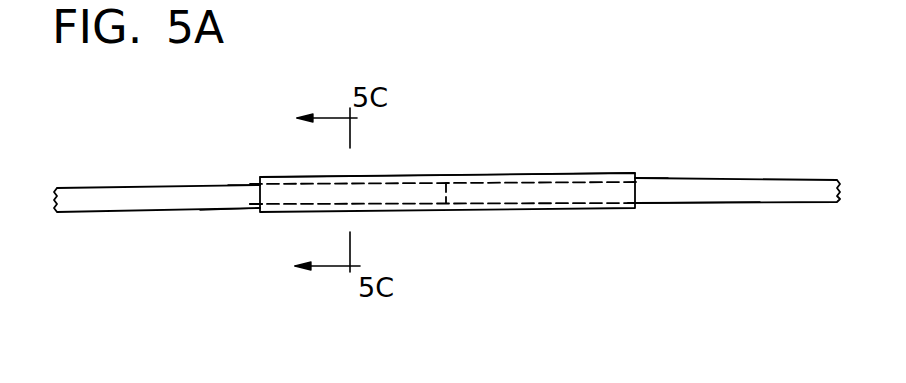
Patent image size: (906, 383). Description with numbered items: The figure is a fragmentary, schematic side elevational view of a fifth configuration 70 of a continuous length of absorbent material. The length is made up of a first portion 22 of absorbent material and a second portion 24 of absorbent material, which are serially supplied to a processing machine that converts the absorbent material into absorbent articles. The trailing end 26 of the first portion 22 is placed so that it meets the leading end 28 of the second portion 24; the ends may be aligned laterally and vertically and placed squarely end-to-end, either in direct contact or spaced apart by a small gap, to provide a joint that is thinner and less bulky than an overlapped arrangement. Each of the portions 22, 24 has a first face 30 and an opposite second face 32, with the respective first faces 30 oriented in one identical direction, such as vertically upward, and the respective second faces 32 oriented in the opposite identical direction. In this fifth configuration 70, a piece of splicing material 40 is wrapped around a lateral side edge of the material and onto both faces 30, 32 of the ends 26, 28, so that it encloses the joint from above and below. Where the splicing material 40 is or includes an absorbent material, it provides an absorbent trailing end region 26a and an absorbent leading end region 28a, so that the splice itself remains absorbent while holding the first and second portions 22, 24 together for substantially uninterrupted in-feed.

The first portion of absorbent material 22 is at (148, 187).
The second portion of absorbent material 24 is at (772, 178).
The trailing end 26 is at (417, 213).
The absorbent trailing end region 26a is at (637, 210).
The leading end 28 is at (542, 210).
The absorbent leading end region 28a is at (310, 212).
The first face 30 is at (233, 186).
The second face 32 is at (223, 210).
The piece of splicing material 40 is at (553, 173).
The fifth configuration 70 is at (488, 150).